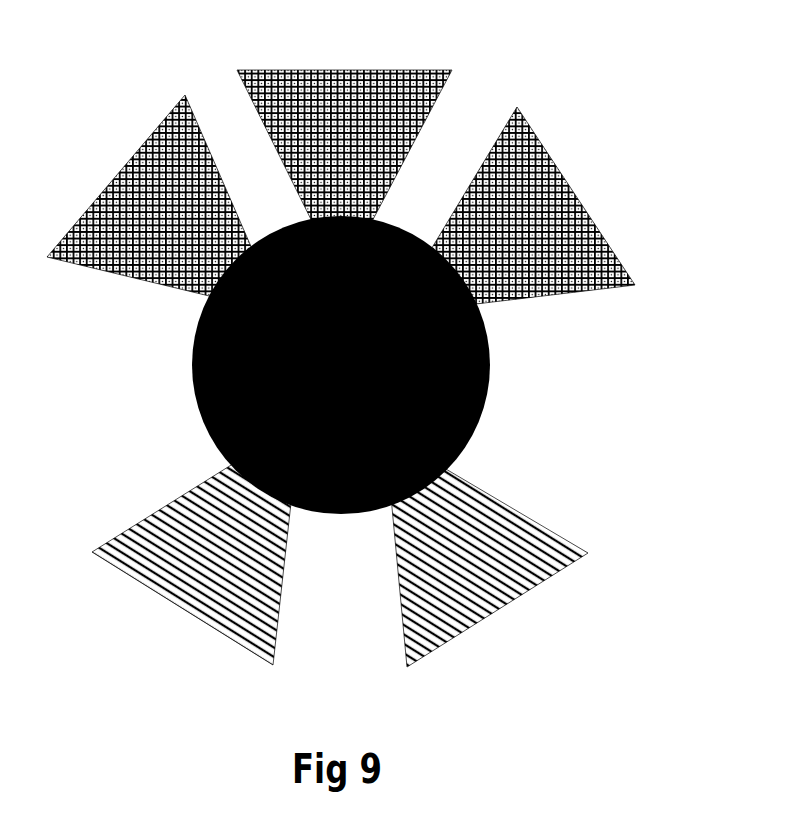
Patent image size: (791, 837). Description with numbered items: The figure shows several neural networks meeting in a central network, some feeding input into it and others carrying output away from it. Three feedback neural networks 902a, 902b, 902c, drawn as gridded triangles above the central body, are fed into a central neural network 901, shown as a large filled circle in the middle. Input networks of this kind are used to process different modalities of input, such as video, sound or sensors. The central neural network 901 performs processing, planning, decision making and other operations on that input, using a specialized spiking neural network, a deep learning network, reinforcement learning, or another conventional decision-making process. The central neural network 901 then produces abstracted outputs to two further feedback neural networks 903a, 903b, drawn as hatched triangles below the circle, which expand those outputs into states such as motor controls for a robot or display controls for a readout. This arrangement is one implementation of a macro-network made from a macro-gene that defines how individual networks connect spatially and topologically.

The central neural network 901 is at (490, 360).
The feedback neural network 902a is at (135, 152).
The feedback neural network 902b is at (387, 70).
The feedback neural network 902c is at (563, 177).
The feedback neural network 903a is at (135, 578).
The feedback neural network 903b is at (498, 610).